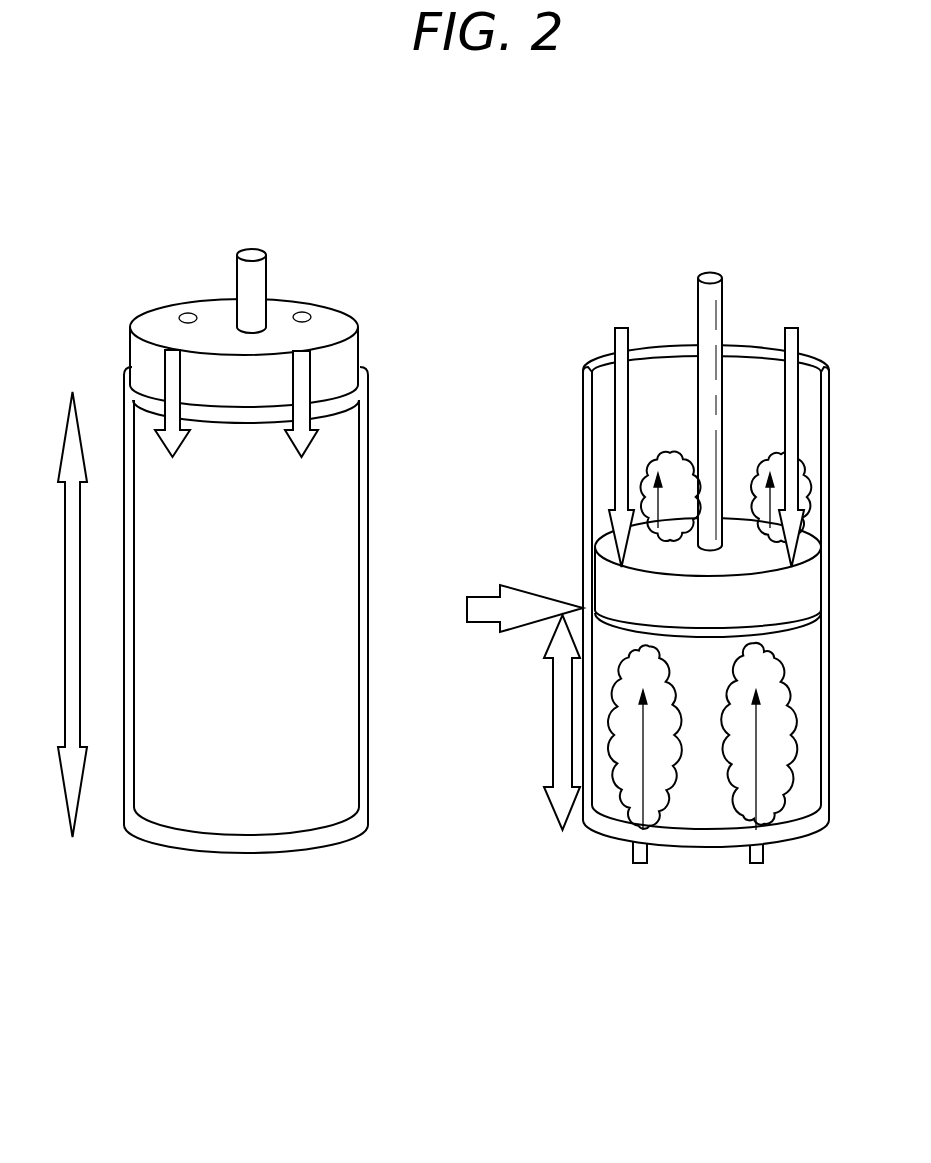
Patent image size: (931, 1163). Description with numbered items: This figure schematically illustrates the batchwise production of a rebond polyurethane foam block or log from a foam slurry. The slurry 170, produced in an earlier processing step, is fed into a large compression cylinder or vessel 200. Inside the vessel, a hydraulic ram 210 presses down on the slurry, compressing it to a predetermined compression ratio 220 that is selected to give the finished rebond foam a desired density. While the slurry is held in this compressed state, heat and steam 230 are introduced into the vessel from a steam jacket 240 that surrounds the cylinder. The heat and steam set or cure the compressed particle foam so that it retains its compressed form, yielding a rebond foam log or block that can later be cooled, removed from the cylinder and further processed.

The slurry 170 is at (308, 527).
The compression cylinder 200 is at (178, 853).
The hydraulic ram 210 is at (360, 352).
The compression ratio 220 is at (503, 608).
The heat and steam 230 is at (643, 473).
The steam jacket 240 is at (627, 848).